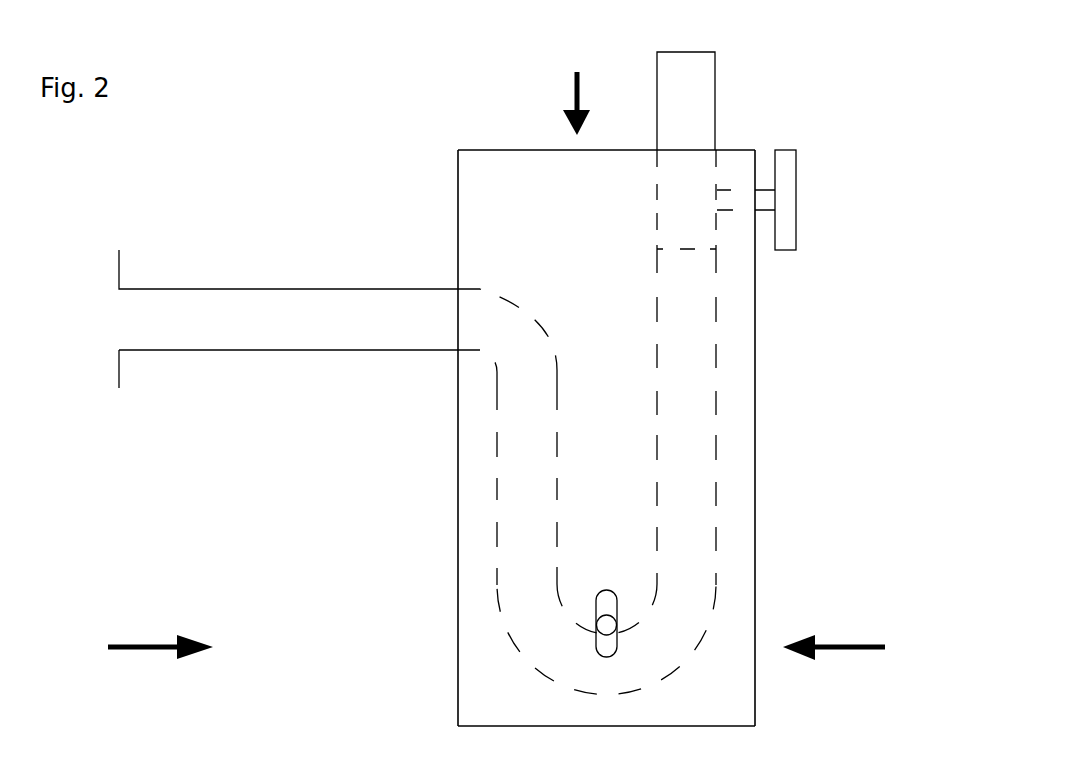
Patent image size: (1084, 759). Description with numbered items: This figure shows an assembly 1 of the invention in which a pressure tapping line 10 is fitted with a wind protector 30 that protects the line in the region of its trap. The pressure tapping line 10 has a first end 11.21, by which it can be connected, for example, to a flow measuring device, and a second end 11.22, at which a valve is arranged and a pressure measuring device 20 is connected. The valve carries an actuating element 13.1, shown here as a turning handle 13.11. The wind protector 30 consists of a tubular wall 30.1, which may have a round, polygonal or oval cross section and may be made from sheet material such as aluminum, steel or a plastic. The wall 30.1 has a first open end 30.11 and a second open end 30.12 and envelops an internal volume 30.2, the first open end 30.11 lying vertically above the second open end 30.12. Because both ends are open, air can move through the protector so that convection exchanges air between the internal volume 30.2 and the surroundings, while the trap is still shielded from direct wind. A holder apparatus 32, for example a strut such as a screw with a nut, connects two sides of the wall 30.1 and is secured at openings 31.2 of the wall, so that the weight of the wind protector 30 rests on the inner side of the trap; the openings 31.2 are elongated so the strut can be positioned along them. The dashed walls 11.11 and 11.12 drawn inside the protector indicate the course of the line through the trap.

The assembly 1 is at (178, 210).
The pressure tapping line 10 is at (277, 288).
The inner channel wall 11.11 is at (398, 407).
The outer channel wall 11.12 is at (737, 448).
The first end 11.21 is at (159, 390).
The second end 11.22 is at (735, 288).
The actuating element 13.1 is at (815, 190).
The turning handle 13.11 is at (815, 210).
The pressure measuring device 20 is at (735, 90).
The wind protector 30 is at (457, 608).
The tubular wall 30.1 is at (497, 170).
The first open end 30.11 is at (417, 150).
The second open end 30.12 is at (795, 725).
The internal volume 30.2 is at (737, 408).
The openings 31.2 is at (607, 646).
The holder apparatus 32 is at (606, 625).